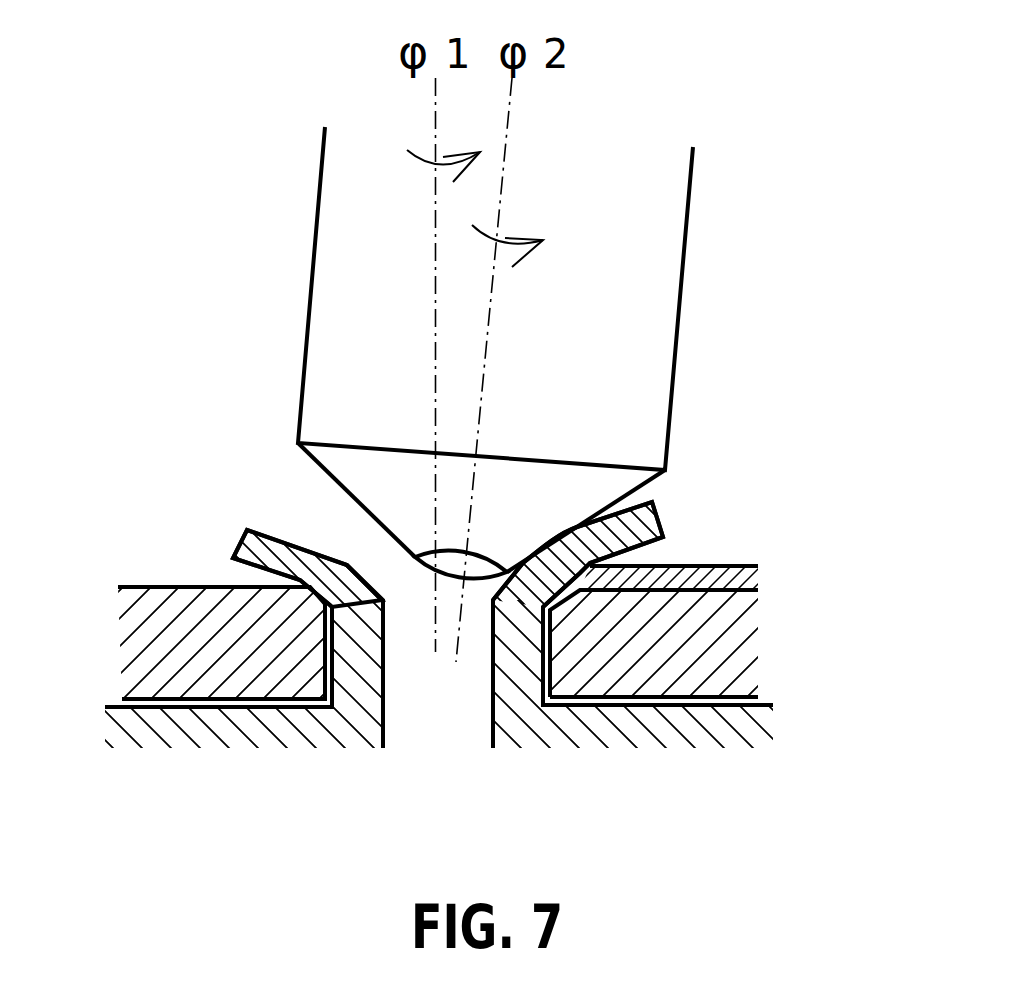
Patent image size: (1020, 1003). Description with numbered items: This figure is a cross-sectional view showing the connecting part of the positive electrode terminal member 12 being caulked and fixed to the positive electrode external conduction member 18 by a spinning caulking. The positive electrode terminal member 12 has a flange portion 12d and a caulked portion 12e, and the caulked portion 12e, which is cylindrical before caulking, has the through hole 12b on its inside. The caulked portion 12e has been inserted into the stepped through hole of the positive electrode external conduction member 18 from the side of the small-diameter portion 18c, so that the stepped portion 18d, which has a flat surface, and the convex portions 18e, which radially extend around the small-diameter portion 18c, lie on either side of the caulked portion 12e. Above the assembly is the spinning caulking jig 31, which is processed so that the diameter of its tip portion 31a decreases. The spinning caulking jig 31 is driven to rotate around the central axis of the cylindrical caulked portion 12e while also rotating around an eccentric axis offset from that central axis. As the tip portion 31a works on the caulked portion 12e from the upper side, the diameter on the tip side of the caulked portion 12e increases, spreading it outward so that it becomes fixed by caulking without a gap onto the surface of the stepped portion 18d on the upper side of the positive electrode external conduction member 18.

The spinning caulking jig 31 is at (363, 218).
The tip portion 31a is at (387, 493).
The positive electrode terminal member 12 is at (330, 728).
The through hole 12b is at (448, 698).
The flange portion 12d is at (183, 725).
The caulked portion 12e is at (647, 527).
The positive electrode external conduction member 18 is at (708, 638).
The small-diameter portion 18c is at (318, 652).
The stepped portion 18d is at (140, 585).
The convex portions 18e is at (707, 577).